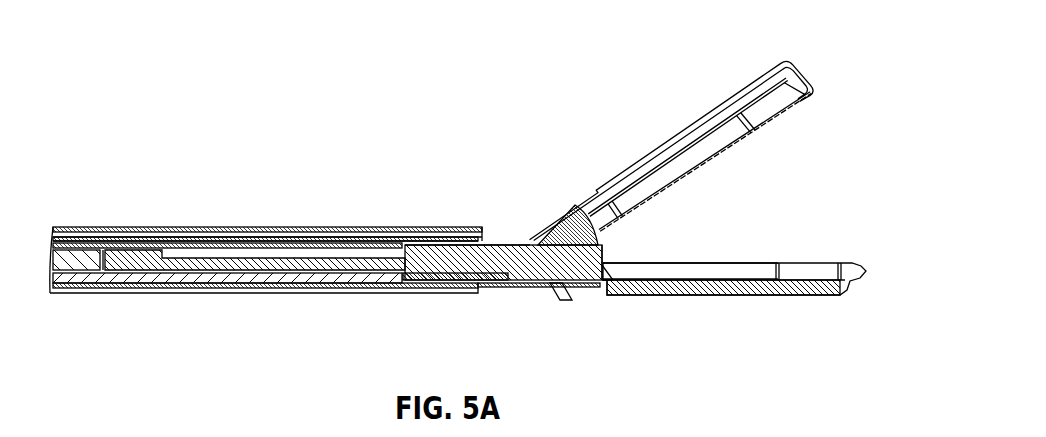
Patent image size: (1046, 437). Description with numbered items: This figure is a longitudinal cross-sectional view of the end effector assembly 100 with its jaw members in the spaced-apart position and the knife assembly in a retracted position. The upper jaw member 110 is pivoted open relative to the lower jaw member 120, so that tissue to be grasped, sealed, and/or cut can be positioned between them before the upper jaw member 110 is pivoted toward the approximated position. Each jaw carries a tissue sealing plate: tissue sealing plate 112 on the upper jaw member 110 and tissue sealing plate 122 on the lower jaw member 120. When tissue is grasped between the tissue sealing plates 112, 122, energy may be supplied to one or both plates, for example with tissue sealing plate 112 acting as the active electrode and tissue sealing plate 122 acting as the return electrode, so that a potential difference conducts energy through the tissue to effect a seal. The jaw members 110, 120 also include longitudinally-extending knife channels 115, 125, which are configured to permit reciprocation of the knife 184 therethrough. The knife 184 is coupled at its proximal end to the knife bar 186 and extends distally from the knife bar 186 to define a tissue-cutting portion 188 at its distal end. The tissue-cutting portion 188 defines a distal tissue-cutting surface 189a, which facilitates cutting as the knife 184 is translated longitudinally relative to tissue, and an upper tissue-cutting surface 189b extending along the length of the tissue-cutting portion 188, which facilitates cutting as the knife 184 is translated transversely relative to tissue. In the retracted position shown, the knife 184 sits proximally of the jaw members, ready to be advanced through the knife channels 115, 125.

The end effector assembly 100 is at (603, 108).
The jaw member 110 is at (699, 150).
The tissue sealing plate 112 is at (700, 155).
The knife channel 115 is at (687, 147).
The jaw member 120 is at (756, 281).
The tissue sealing plate 122 is at (755, 263).
The knife channel 125 is at (693, 272).
The knife 184 is at (305, 265).
The knife bar 186 is at (81, 265).
The tissue-cutting portion 188 is at (528, 272).
The distal tissue-cutting surface 189a is at (610, 252).
The upper tissue-cutting surface 189b is at (501, 238).